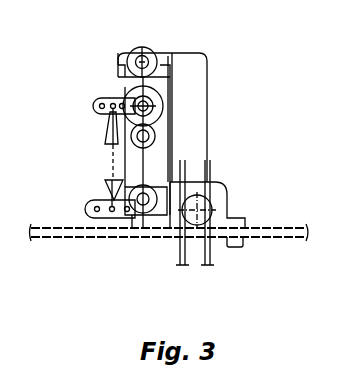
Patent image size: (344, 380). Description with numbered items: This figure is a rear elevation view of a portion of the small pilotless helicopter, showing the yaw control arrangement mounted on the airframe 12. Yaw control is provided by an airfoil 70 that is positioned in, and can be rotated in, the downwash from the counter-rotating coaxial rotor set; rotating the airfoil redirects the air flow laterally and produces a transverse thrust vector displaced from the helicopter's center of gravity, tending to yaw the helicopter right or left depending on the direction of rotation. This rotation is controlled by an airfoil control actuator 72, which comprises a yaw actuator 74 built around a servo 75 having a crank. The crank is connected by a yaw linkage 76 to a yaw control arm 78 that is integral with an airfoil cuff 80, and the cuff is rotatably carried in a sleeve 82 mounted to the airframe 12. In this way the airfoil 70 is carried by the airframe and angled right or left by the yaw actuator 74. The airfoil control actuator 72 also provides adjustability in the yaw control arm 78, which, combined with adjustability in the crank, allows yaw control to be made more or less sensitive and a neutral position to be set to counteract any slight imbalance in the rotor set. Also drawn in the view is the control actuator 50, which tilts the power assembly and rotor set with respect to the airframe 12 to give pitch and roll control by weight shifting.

The airframe 12 is at (282, 228).
The control actuator 50 is at (93, 100).
The airfoil 70 is at (199, 258).
The airfoil control actuator 72 is at (232, 66).
The yaw actuator 74 is at (114, 85).
The servo 75 is at (168, 174).
The pointers 76 is at (101, 182).
The yaw control arm 78 is at (87, 204).
The airfoil cuff 80 is at (222, 170).
The sleeve 82 is at (226, 203).